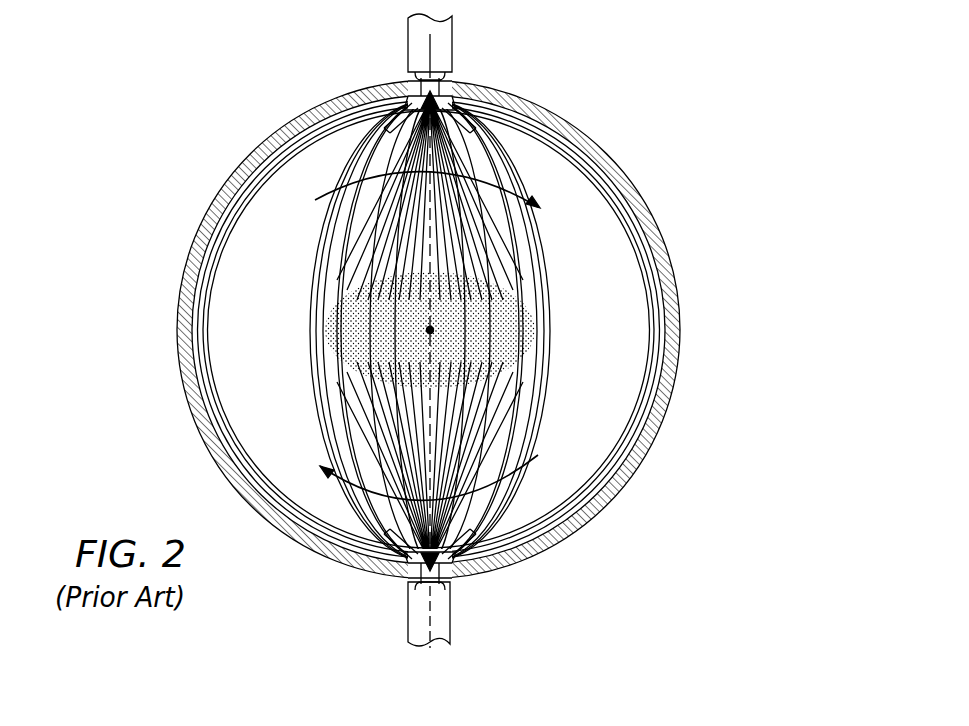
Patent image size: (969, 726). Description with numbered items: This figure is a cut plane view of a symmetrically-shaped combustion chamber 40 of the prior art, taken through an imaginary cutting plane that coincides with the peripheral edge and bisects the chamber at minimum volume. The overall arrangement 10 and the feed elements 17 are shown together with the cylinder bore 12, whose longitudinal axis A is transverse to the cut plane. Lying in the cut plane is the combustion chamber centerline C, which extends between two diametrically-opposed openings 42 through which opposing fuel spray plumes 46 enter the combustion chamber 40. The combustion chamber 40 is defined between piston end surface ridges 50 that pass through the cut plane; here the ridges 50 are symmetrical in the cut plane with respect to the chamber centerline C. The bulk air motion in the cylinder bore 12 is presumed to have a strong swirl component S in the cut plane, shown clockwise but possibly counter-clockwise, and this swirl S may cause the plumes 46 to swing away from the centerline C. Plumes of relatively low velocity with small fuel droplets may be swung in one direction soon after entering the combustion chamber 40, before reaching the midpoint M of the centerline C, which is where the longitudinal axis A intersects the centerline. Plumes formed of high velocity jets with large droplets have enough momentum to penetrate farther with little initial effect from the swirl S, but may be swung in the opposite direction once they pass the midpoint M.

The spherical reactor vessel 10 is at (177, 322).
The cylinder bore 12 is at (256, 180).
The feed rod 17 is at (418, 46).
The combustion chamber 40 is at (475, 160).
The openings 42 is at (447, 103).
The fuel spray plumes 46 is at (477, 230).
The piston end surface ridges 50 is at (233, 274).
The swirl component S is at (357, 182).
The combustion chamber centerline C is at (430, 415).
The longitudinal axis A is at (430, 330).
The midpoint M is at (430, 330).